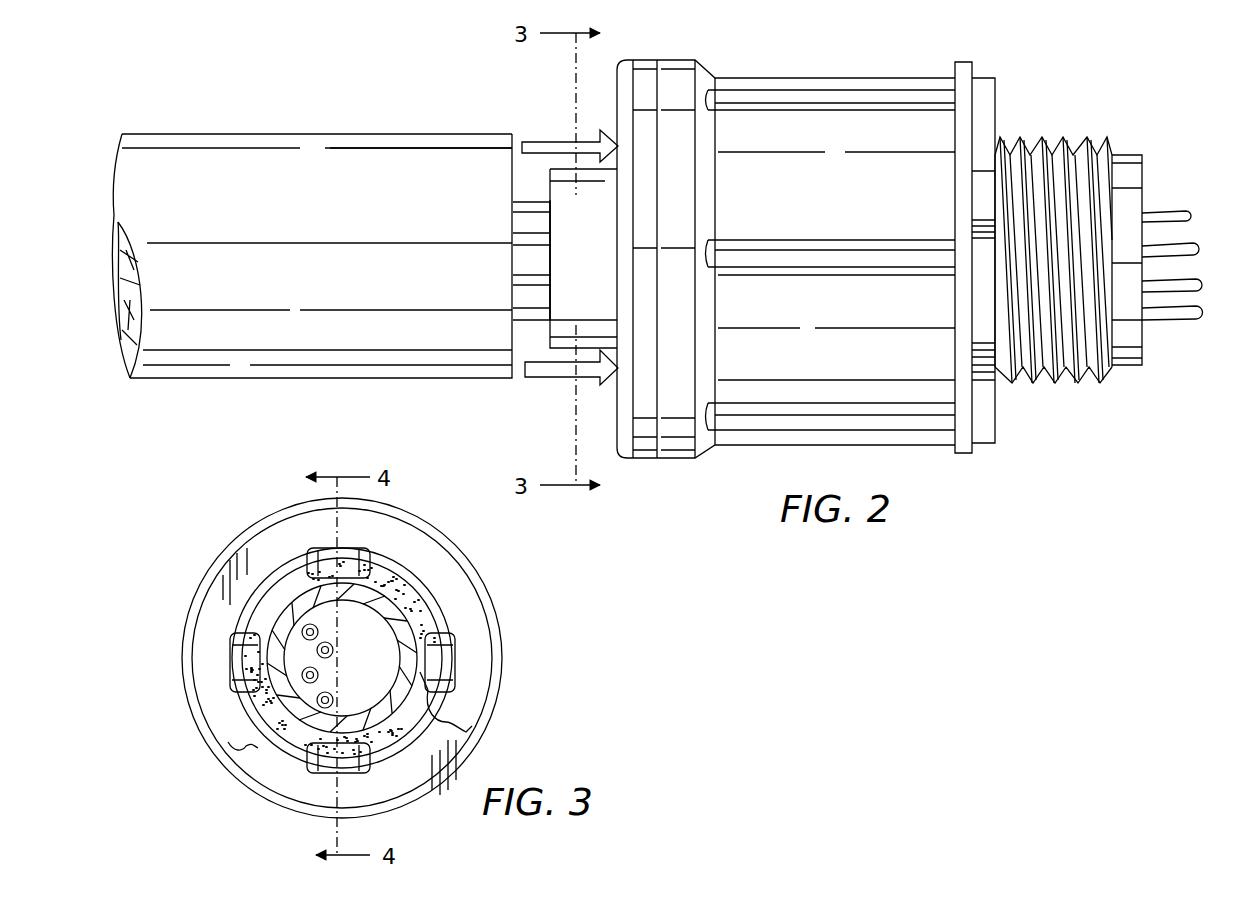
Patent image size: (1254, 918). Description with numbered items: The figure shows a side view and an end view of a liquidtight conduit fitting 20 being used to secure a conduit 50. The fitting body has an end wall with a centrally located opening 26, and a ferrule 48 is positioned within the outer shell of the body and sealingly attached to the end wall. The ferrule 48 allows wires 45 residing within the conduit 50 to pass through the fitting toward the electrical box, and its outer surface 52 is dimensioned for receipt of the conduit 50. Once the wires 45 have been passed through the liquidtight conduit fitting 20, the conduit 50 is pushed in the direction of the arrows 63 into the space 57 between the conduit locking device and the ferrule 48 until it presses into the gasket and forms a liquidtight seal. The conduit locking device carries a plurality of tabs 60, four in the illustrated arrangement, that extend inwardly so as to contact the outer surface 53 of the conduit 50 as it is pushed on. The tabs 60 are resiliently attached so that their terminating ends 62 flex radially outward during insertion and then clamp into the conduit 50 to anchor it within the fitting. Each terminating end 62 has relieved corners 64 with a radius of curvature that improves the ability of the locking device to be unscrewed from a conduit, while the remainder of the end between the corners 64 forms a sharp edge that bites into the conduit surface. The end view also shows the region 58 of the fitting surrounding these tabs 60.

In FIG. 2, the liquidtight conduit fitting 20 is at (946, 52).
In FIG. 2, the opening 26 is at (1170, 327).
In FIG. 2, the wires 45 is at (526, 202).
In FIG. 2, the ferrule 48 is at (565, 170).
In FIG. 3, the ferrule 48 is at (290, 703).
In FIG. 2, the conduit 50 is at (272, 135).
In FIG. 2, the outer surface of the ferrule 52 is at (596, 243).
In FIG. 2, the outer surface of the conduit 53 is at (380, 155).
In FIG. 3, the space 57 is at (410, 600).
In FIG. 3, the housing shell 58 is at (475, 708).
In FIG. 3, the tabs 60 is at (442, 664).
In FIG. 3, the terminating ends 62 is at (418, 668).
In FIG. 2, the arrows 63 is at (586, 141).
In FIG. 3, the relieved corners 64 is at (402, 562).